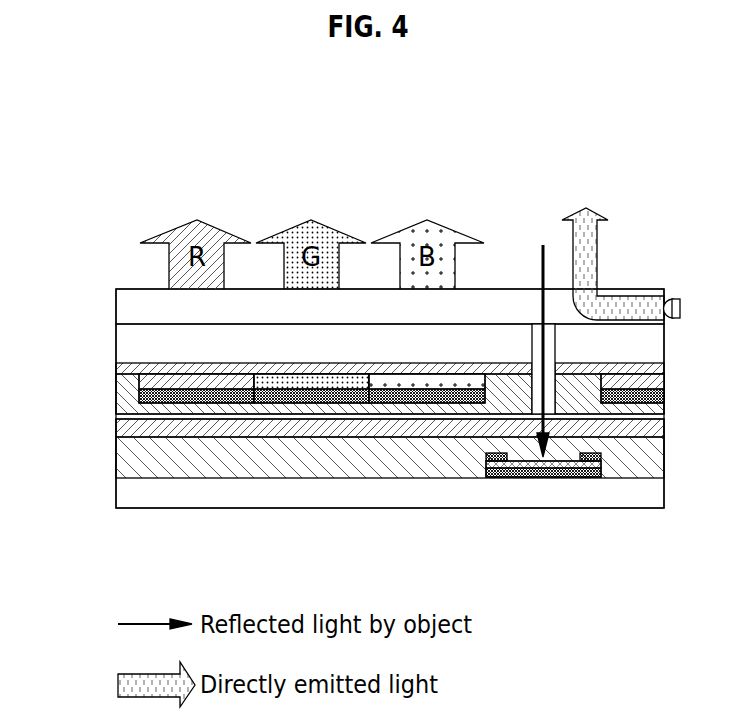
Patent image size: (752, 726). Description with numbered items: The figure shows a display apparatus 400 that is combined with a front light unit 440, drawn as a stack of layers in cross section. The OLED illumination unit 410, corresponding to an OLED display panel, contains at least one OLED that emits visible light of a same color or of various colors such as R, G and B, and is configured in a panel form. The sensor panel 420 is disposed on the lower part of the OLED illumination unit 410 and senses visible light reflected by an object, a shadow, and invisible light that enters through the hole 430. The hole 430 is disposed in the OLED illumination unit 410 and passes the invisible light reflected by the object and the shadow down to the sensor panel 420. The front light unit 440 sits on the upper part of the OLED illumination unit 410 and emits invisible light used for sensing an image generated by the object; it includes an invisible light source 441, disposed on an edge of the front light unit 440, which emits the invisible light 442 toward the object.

The display apparatus 400 is at (428, 96).
The OLED illumination unit 410 is at (112, 324).
The sensor panel 420 is at (112, 419).
The hole 430 is at (532, 333).
The front light unit 440 is at (116, 304).
The invisible light source 441 is at (672, 299).
The invisible light 442 is at (586, 208).